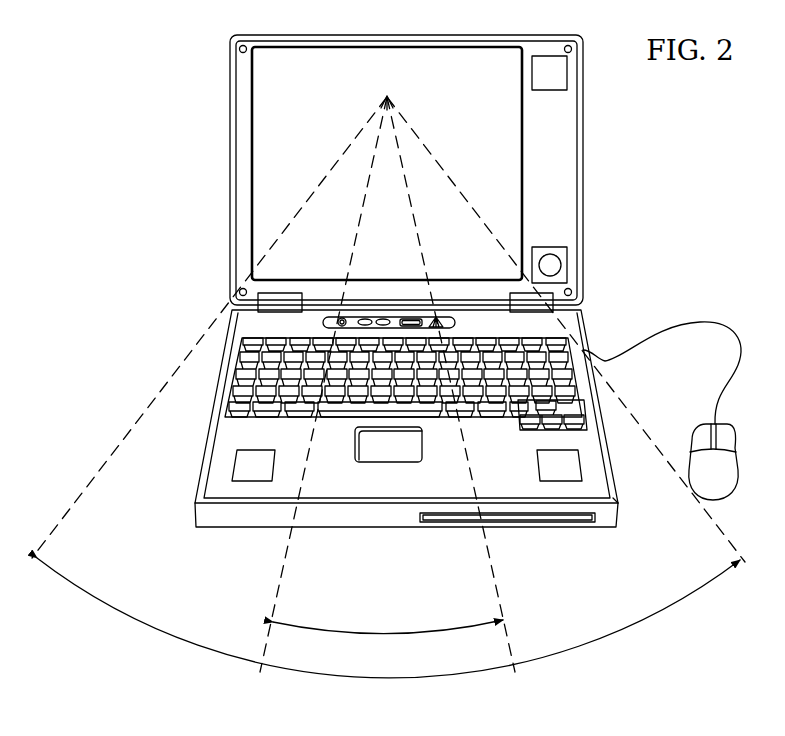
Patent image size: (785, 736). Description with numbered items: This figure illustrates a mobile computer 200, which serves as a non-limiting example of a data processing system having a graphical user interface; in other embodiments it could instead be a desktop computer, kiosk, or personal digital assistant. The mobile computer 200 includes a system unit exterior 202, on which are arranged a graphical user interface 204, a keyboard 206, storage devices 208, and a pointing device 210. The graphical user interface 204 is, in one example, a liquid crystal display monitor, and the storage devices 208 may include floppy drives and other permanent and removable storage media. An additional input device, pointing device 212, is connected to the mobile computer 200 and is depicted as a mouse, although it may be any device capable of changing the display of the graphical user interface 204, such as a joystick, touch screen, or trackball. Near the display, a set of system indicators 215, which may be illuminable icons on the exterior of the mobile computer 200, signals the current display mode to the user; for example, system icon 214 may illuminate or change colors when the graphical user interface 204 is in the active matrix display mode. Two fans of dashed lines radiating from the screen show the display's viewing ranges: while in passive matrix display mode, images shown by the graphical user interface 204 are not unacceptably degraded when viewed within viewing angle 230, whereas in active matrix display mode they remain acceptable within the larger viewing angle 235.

The mobile computer 200 is at (134, 80).
The system unit exterior 202 is at (365, 529).
The graphical user interface 204 is at (262, 150).
The keyboard 206 is at (230, 371).
The storage devices 208 is at (599, 523).
The pointing device 210 is at (374, 461).
The pointing device 212 is at (700, 426).
The system icon 214 is at (437, 317).
The set of system indicators 215 is at (341, 317).
The viewing angle 230 is at (417, 633).
The larger viewing angle 235 is at (346, 676).